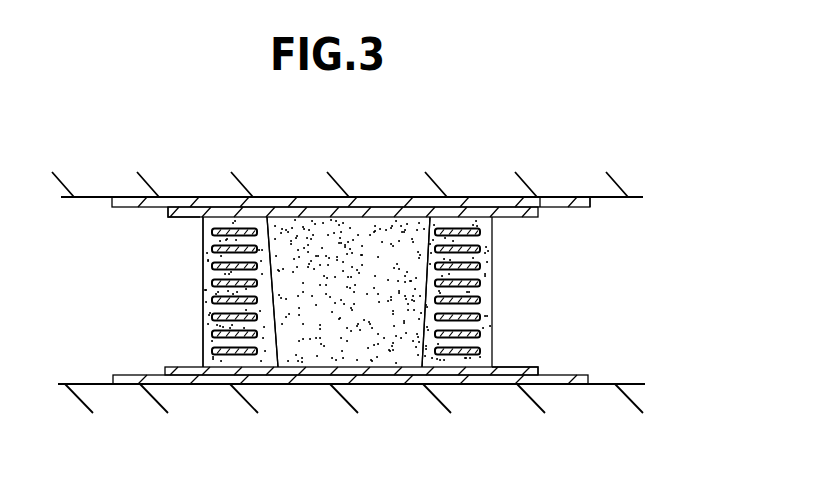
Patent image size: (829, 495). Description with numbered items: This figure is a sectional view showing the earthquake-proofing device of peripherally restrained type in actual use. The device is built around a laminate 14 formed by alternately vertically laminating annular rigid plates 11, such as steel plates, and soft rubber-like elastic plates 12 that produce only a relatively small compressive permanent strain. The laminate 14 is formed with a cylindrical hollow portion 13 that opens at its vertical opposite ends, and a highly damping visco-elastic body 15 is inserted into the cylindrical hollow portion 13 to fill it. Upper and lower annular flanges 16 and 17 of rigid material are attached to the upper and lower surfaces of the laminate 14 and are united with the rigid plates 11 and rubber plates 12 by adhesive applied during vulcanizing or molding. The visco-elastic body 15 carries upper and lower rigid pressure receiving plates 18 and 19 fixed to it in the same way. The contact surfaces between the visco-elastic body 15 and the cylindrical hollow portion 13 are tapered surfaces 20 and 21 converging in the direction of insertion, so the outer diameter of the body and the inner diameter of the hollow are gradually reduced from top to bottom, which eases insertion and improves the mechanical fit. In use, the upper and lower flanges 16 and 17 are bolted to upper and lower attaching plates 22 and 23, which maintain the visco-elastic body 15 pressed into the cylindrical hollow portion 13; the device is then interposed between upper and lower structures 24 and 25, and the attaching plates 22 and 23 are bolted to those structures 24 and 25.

The annular rigid plate 11 is at (480, 283).
The soft rubber-like elastic plate 12 is at (218, 290).
The cylindrical hollow portion 13 is at (280, 347).
The laminate 14 is at (188, 338).
The highly damping visco-elastic body 15 is at (360, 200).
The upper annular flange 16 is at (173, 216).
The lower annular flange 17 is at (516, 367).
The upper pressure receiving plate 18 is at (300, 208).
The lower pressure receiving plate 19 is at (364, 370).
The tapered surface 20 is at (428, 230).
The tapered surface 21 is at (278, 345).
The upper attaching plate 22 is at (578, 206).
The lower attaching plate 23 is at (563, 377).
The upper structure 24 is at (88, 190).
The lower structure 25 is at (108, 390).